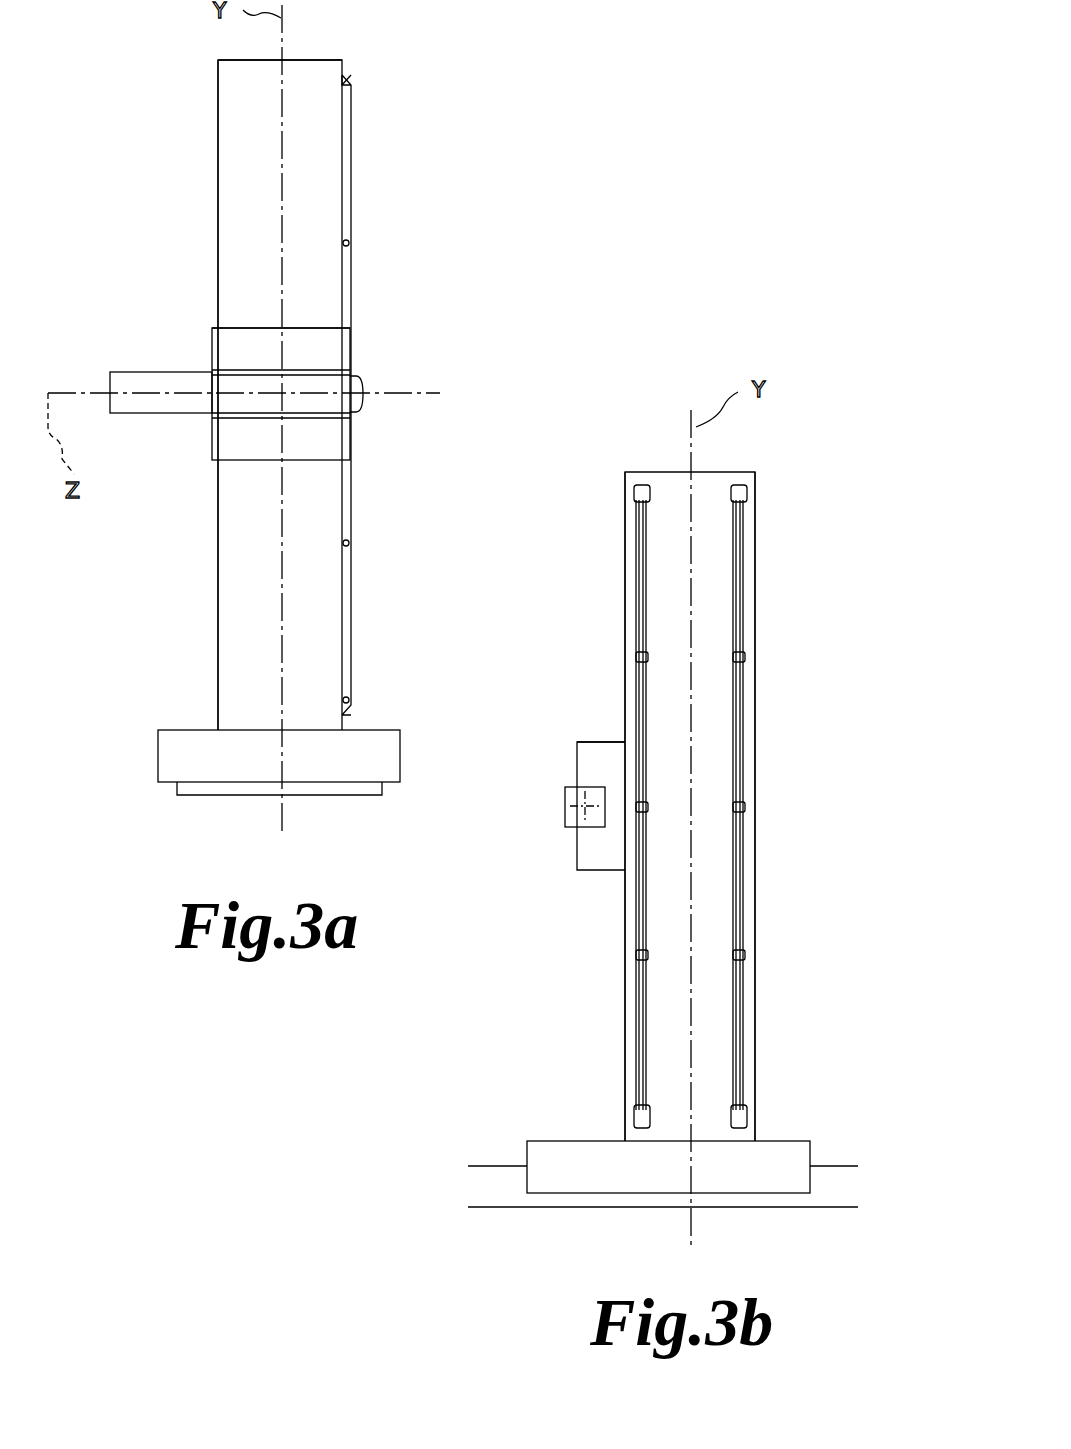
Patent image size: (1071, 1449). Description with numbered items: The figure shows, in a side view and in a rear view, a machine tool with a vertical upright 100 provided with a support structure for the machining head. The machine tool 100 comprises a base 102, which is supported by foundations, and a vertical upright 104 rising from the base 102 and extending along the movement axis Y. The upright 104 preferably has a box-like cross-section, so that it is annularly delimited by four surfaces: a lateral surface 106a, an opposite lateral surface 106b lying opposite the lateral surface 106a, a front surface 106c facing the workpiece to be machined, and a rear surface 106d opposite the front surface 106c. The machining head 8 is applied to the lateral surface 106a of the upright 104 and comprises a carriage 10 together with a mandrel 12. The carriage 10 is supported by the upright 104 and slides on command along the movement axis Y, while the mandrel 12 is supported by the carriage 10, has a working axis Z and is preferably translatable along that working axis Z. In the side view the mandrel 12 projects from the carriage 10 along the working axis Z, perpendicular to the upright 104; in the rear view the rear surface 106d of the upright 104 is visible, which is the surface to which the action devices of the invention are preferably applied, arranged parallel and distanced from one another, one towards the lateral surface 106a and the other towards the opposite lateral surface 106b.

In FIG. 3A, the machine tool with a vertical upright 100 is at (388, 128).
In FIG. 3B, the machine tool with a vertical upright 100 is at (800, 500).
In FIG. 3A, the base 102 is at (200, 753).
In FIG. 3B, the base 102 is at (563, 1166).
In FIG. 3A, the vertical upright 104 is at (210, 560).
In FIG. 3B, the vertical upright 104 is at (759, 995).
In FIG. 3A, the lateral surface 106a is at (305, 268).
In FIG. 3B, the lateral surface 106a is at (622, 572).
In FIG. 3B, the opposite lateral surface 106b is at (758, 631).
In FIG. 3A, the front surface 106c is at (216, 123).
In FIG. 3A, the rear surface 106d is at (344, 526).
In FIG. 3B, the rear surface 106d is at (718, 752).
In FIG. 3A, the machining head 8 is at (248, 325).
In FIG. 3B, the machining head 8 is at (574, 753).
In FIG. 3A, the carriage 10 is at (320, 358).
In FIG. 3B, the carriage 10 is at (602, 852).
In FIG. 3A, the mandrel 12 is at (128, 366).
In FIG. 3B, the mandrel 12 is at (560, 808).